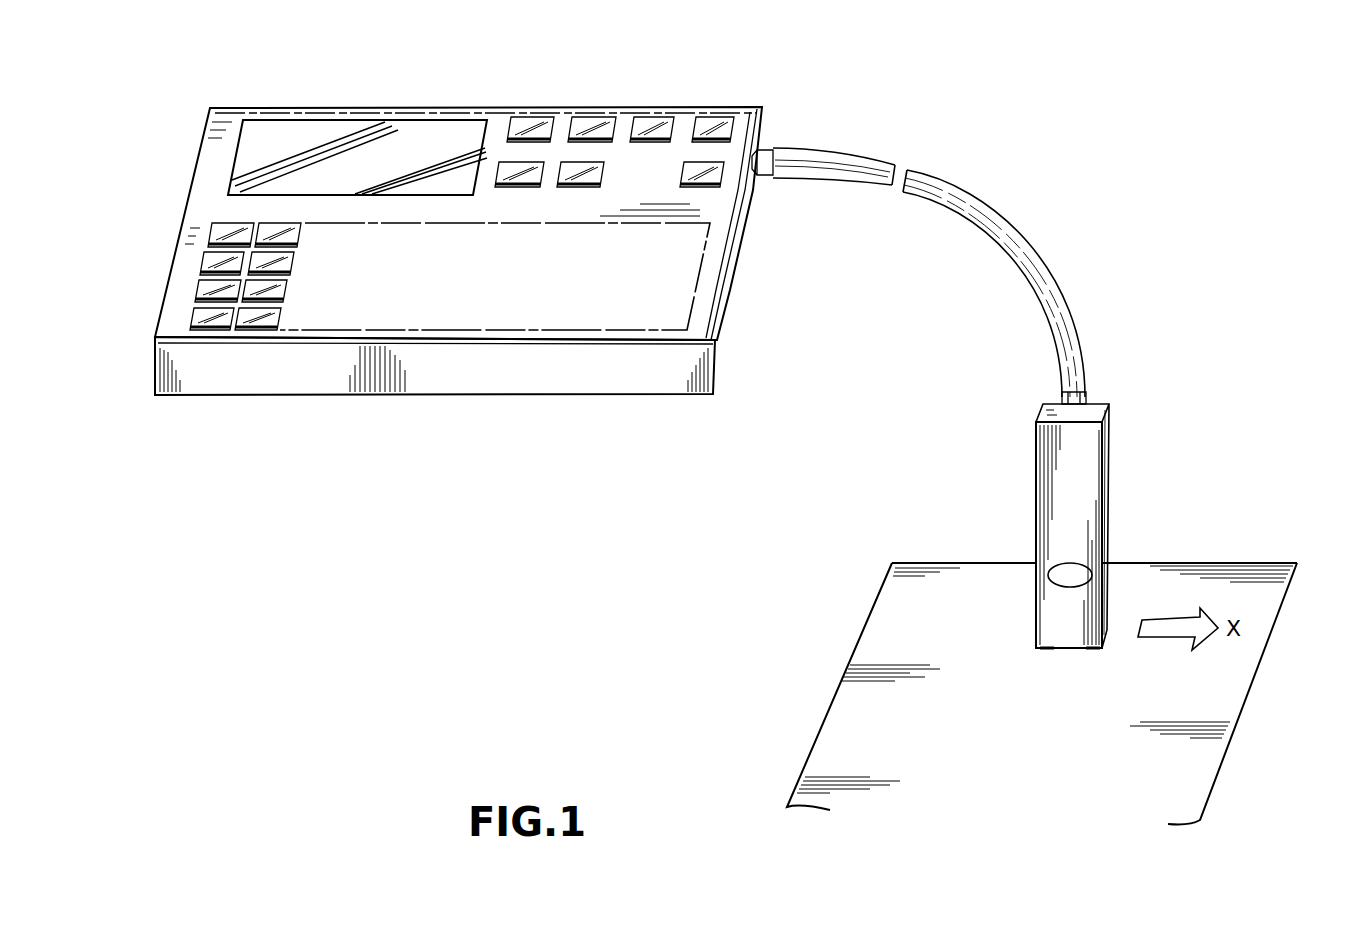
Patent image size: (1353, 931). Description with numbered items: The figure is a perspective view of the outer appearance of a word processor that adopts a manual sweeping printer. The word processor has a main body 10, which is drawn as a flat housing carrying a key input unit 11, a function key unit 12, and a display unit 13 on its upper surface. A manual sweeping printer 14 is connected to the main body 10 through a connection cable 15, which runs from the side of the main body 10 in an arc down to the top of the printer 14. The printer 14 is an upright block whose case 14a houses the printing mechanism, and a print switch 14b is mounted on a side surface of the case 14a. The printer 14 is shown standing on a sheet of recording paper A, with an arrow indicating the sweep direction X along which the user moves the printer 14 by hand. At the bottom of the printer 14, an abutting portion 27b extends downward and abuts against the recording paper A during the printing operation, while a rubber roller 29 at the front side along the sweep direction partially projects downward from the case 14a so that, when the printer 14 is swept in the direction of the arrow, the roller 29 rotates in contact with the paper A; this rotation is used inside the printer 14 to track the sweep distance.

The main body 10 is at (425, 98).
The key input unit 11 is at (439, 323).
The function key unit 12 is at (627, 118).
The display unit 13 is at (241, 161).
The manual sweeping printer 14 is at (1095, 462).
The case 14a is at (1055, 555).
The print switch 14b is at (1092, 566).
The connection cable 15 is at (1017, 243).
The abutting portion 27b is at (1050, 649).
The rubber roller 29 is at (1093, 649).
The recording paper A is at (835, 713).